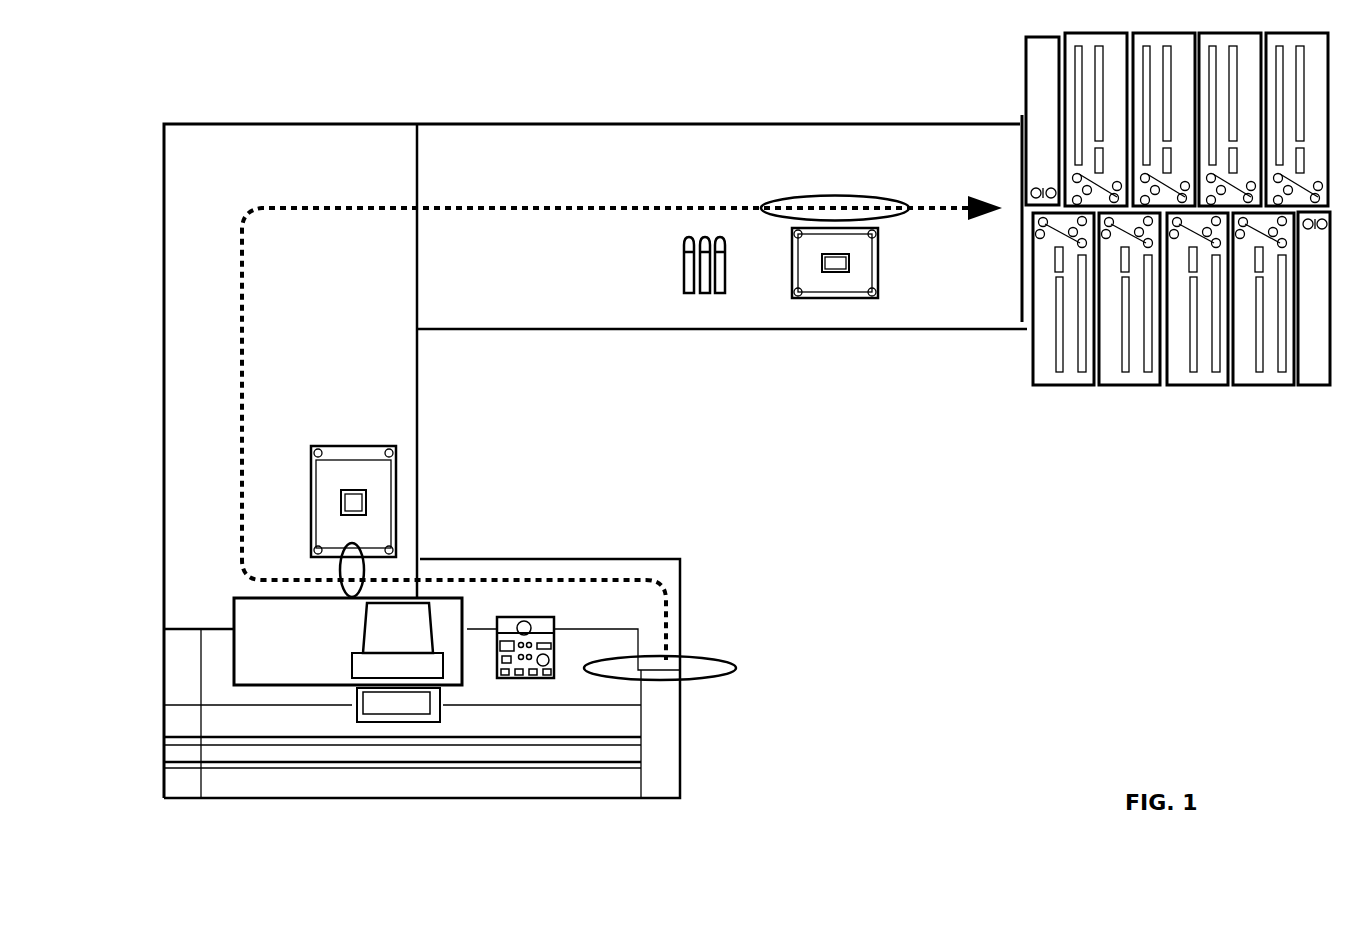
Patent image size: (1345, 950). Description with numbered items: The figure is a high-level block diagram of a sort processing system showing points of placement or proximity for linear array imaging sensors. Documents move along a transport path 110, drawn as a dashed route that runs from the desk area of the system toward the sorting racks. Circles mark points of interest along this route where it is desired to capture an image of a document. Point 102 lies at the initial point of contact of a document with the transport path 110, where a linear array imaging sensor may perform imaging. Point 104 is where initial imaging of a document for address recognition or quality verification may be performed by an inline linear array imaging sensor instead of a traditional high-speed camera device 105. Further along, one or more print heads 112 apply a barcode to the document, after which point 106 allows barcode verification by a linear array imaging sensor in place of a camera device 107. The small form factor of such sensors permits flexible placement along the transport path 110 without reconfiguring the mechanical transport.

The point of placement 102 is at (750, 667).
The point of placement 104 is at (378, 568).
The camera device 105 is at (365, 428).
The point of placement 106 is at (808, 184).
The camera device 107 is at (834, 312).
The transport path 110 is at (304, 196).
The print heads 112 is at (660, 278).